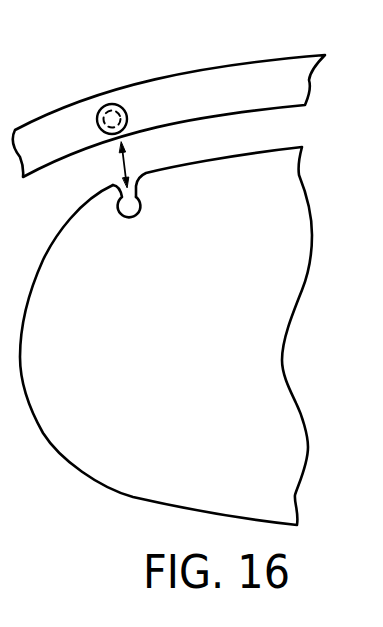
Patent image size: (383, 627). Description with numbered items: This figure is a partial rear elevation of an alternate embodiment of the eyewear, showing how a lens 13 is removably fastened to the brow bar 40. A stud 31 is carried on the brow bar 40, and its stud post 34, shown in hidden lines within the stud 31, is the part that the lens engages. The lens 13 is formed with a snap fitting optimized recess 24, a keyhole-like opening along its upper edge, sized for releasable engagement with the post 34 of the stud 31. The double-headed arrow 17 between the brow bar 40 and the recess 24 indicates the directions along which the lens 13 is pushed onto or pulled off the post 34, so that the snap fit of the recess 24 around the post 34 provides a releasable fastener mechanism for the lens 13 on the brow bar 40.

The lens 13 is at (189, 358).
The arrow 17 is at (123, 167).
The snap fitting optimized recess 24 is at (142, 208).
The stud 31 is at (107, 104).
The stud post 34 is at (129, 113).
The brow bar 40 is at (209, 70).